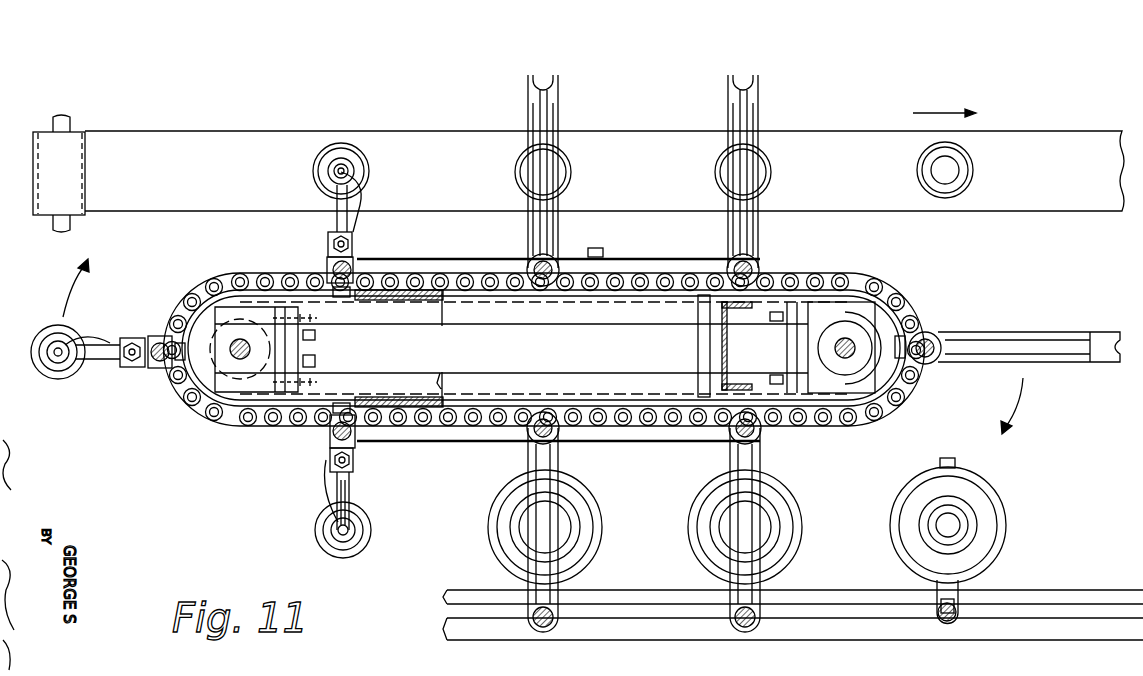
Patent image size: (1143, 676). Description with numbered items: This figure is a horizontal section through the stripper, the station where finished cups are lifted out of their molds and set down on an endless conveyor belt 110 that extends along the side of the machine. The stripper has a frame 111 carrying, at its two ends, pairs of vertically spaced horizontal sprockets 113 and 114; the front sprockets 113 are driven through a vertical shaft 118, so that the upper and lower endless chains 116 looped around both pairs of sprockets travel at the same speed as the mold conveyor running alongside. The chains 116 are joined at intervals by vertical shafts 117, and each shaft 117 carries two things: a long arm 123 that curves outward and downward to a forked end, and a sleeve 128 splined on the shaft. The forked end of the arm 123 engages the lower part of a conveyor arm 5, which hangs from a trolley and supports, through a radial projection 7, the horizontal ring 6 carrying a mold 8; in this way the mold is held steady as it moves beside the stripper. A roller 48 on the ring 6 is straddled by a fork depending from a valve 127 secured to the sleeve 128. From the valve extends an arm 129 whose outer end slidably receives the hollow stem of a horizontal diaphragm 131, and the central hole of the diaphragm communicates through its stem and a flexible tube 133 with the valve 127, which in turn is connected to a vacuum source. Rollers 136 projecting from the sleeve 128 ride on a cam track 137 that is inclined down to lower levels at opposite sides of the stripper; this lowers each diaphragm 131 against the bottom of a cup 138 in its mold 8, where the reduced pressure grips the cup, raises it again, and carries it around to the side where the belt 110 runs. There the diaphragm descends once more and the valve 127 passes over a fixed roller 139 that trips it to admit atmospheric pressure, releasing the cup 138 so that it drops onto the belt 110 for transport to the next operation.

The endless conveyor belt 110 is at (1039, 140).
The cup 138 is at (955, 178).
The long arm 123 is at (758, 109).
The fixed roller 139 is at (603, 249).
The cam track 137 is at (872, 285).
The rollers 136 is at (363, 395).
The frame 111 is at (583, 316).
The endless chains 116 is at (253, 428).
The vertical shaft 118 is at (234, 355).
The front sprockets 113 is at (314, 337).
The rear sprockets 114 is at (771, 349).
The vertical shafts 117 is at (356, 434).
The sleeve 128 is at (328, 441).
The valve 127 is at (355, 463).
The arm 129 is at (351, 500).
The flexible tube 133 is at (325, 503).
The horizontal diaphragm 131 is at (764, 158).
The roller 48 is at (944, 460).
The horizontal ring 6 is at (1006, 515).
The mold 8 is at (990, 540).
The radial projection 7 is at (969, 585).
The arm 5 is at (950, 622).